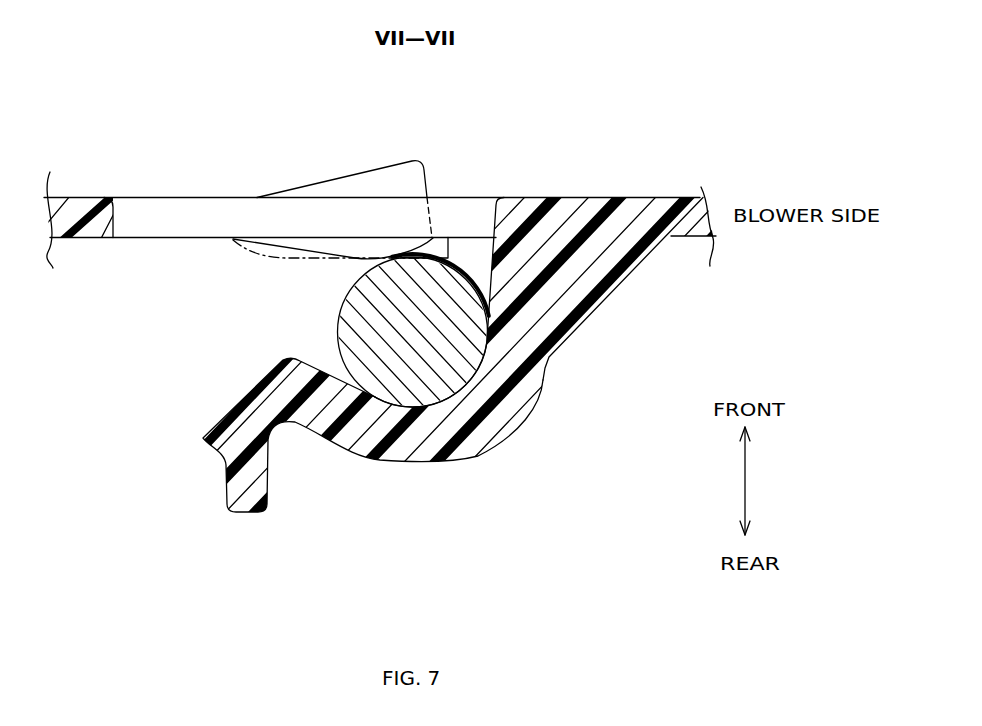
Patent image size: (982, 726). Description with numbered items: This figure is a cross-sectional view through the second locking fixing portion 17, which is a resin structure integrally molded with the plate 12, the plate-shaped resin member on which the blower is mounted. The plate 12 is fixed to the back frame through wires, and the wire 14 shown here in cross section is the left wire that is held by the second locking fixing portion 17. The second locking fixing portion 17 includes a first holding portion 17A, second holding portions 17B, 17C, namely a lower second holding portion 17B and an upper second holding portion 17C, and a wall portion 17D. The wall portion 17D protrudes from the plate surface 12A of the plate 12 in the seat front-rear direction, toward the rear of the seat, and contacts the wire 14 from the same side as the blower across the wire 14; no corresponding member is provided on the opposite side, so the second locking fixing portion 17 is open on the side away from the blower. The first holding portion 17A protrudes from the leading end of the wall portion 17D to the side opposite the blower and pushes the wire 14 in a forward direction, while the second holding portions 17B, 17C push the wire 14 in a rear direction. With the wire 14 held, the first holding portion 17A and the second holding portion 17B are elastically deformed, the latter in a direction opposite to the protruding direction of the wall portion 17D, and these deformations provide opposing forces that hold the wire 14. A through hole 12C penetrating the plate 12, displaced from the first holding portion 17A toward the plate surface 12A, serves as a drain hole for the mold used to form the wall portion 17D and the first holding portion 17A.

The plate 12 is at (86, 193).
The plate surface 12A is at (84, 240).
The through hole 12C is at (183, 213).
The wire 14 is at (340, 313).
The second locking fixing portion 17 is at (446, 326).
The first holding portion 17A is at (362, 458).
The lower second holding portion 17B is at (425, 178).
The upper second holding portion 17C is at (305, 260).
The wall portion 17D is at (489, 285).